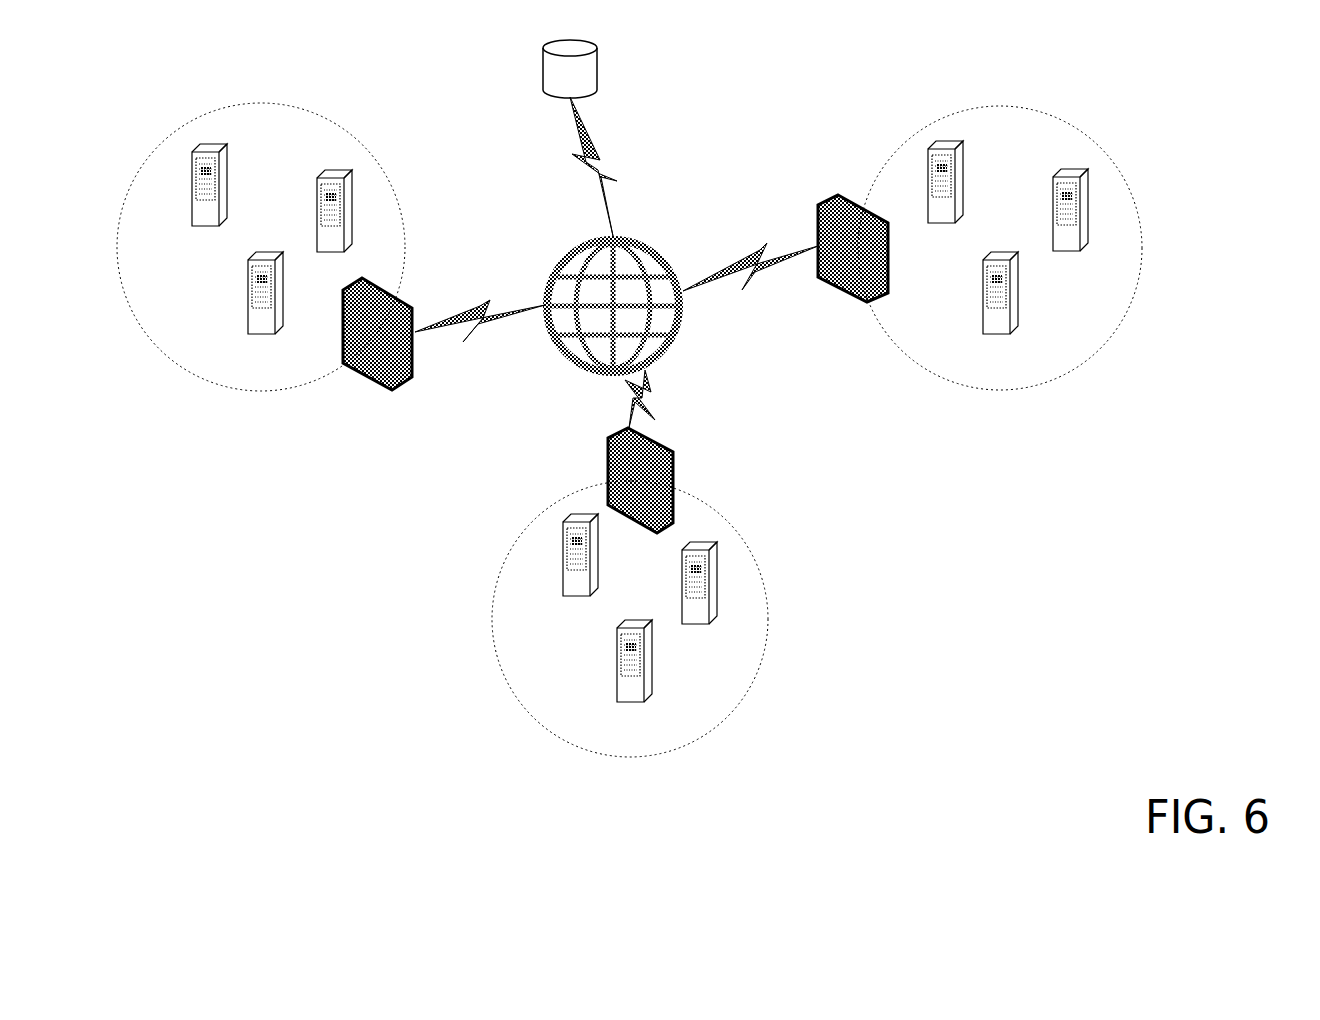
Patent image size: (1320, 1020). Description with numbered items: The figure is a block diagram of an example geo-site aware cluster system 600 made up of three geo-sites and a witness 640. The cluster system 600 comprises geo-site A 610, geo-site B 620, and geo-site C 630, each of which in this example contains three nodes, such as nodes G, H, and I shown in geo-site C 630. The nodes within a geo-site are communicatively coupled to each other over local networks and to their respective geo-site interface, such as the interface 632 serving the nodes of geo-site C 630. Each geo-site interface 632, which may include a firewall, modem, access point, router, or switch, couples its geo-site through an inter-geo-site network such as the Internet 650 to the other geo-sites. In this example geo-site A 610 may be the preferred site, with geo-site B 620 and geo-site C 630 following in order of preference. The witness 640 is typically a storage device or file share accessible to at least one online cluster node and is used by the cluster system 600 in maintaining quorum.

The geo-site aware cluster system 600 is at (399, 523).
The geo-site A 610 is at (377, 162).
The geo-site B 620 is at (1105, 150).
The geo-site C 630 is at (747, 543).
The geo-site interface 632 is at (673, 452).
The witness 640 is at (597, 44).
The Internet 650 is at (645, 240).